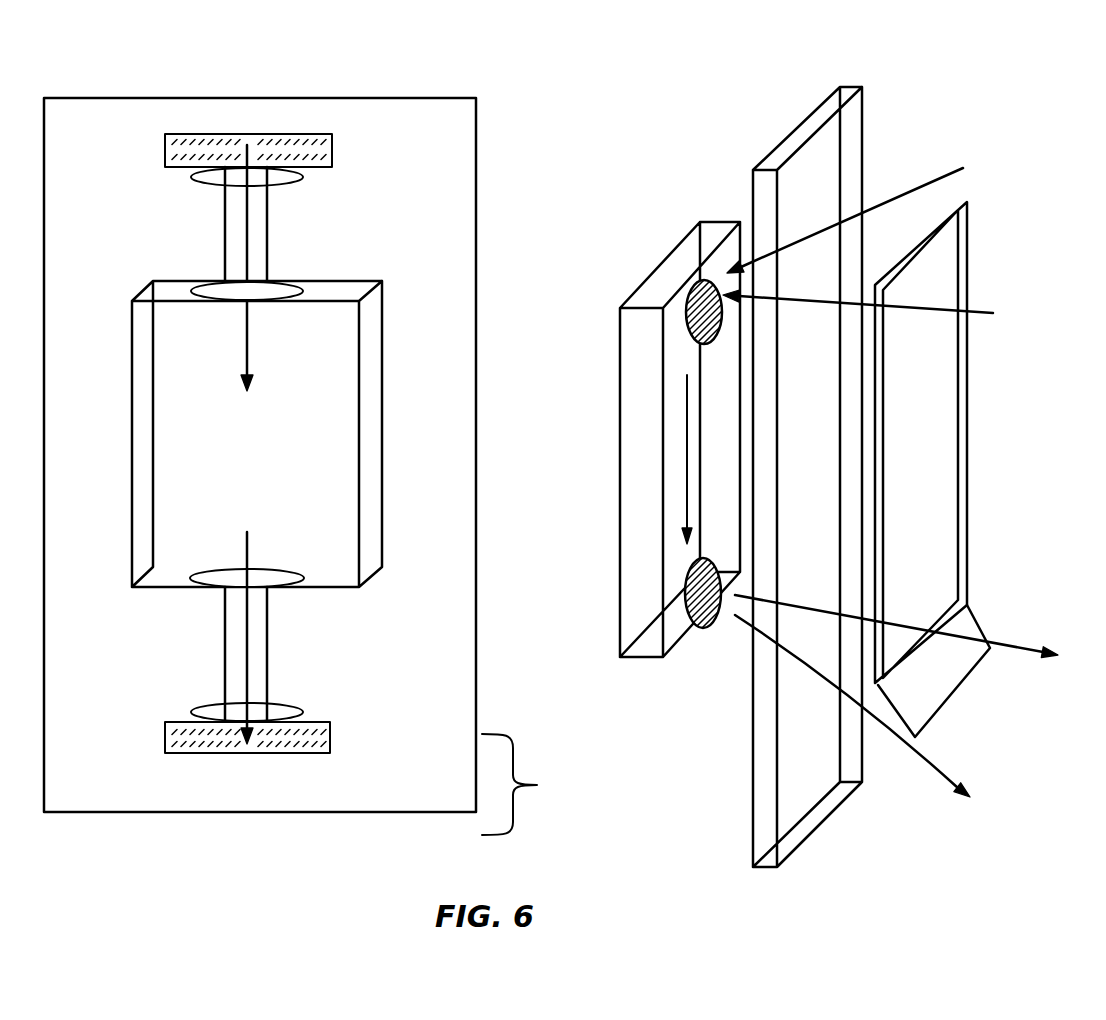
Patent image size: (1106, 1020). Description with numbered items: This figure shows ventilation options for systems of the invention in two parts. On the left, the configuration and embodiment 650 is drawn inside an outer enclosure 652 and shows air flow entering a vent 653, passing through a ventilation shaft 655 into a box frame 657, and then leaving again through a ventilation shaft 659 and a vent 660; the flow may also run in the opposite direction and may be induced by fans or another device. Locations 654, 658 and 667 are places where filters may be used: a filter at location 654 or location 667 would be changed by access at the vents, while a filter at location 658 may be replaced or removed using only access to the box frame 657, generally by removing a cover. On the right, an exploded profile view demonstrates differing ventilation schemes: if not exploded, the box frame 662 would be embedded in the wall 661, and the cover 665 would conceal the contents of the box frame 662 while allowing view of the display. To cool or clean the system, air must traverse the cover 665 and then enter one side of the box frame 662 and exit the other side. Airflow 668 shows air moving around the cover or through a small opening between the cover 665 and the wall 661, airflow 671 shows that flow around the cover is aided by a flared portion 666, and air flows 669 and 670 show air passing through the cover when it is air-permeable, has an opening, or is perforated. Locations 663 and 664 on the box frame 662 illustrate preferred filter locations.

The configuration and embodiment 650 is at (537, 785).
The housing 652 is at (410, 98).
The vent 653 is at (336, 150).
The location 654 is at (304, 177).
The ventilation shaft 655 is at (268, 244).
The box frame 657 is at (382, 344).
The location 658 is at (300, 581).
The ventilation shaft 659 is at (222, 608).
The vent 660 is at (331, 741).
The wall 661 is at (805, 120).
The box frame 662 is at (677, 248).
The location 663 is at (686, 300).
The location 664 is at (688, 575).
The cover 665 is at (968, 458).
The flared portion 666 is at (975, 626).
The location 667 is at (301, 713).
The airflow 668 is at (935, 173).
The air flow 669 is at (977, 310).
The air flow 670 is at (1000, 650).
The airflow 671 is at (940, 768).